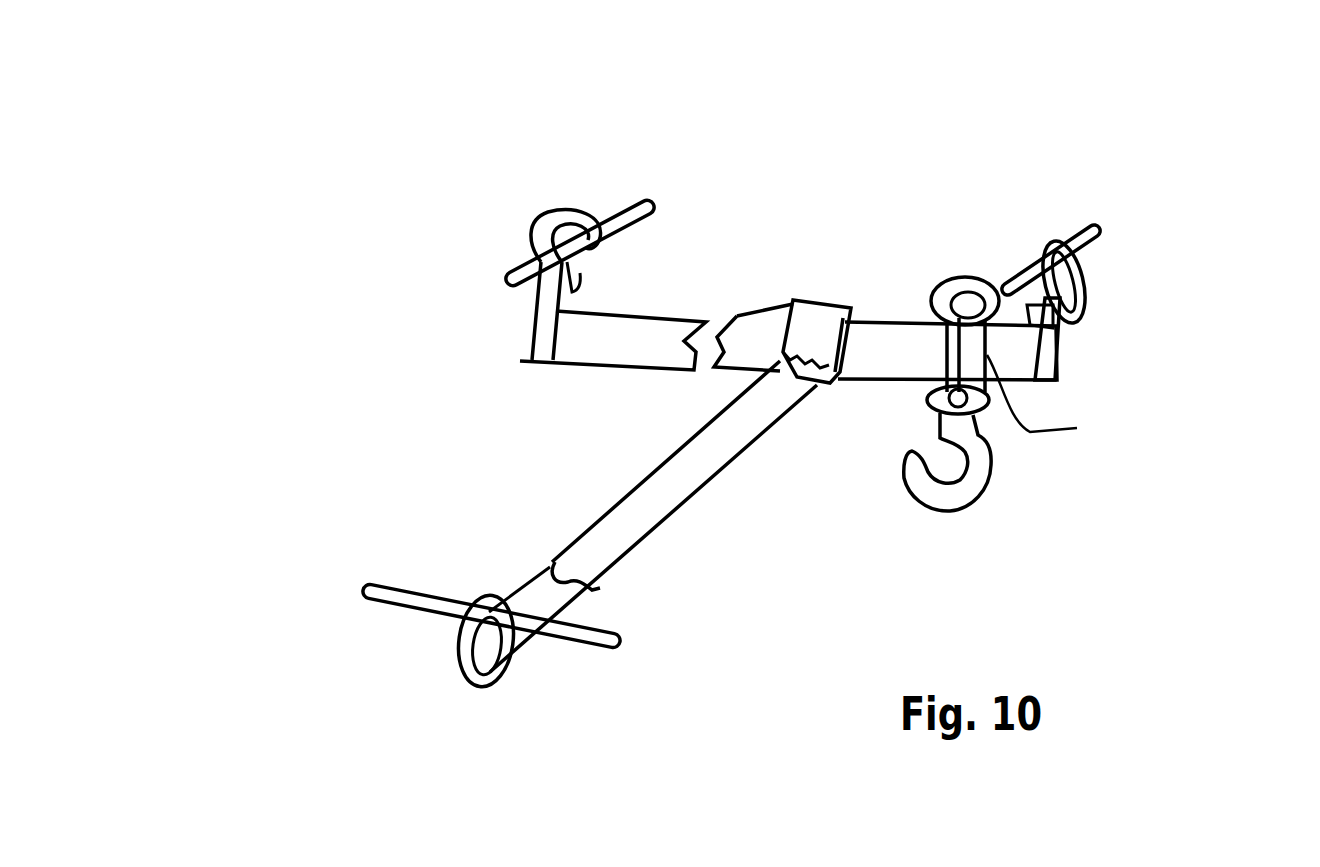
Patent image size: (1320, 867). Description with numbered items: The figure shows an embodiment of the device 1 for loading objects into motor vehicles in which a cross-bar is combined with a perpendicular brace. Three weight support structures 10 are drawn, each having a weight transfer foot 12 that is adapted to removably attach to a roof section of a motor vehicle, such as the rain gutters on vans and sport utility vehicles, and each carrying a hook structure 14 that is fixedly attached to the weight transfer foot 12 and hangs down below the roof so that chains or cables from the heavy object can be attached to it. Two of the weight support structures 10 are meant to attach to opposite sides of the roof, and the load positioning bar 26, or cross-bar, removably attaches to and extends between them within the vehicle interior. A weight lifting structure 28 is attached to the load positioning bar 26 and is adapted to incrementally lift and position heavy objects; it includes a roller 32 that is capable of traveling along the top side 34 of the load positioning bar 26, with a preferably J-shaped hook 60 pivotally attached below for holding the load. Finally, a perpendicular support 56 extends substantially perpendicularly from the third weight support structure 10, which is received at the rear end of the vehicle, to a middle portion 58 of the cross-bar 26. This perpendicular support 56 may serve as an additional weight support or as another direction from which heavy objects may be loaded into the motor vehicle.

The device 1 is at (382, 422).
The weight support structure 10 is at (577, 160).
The weight transfer foot 12 is at (635, 205).
The hook structure 14 is at (540, 220).
The load positioning bar 26 is at (862, 357).
The weight lifting structure 28 is at (973, 226).
The roller 32 is at (940, 293).
The top side 34 is at (613, 310).
The perpendicular support 56 is at (663, 510).
The middle portion 58 is at (818, 318).
The hook 60 is at (977, 477).